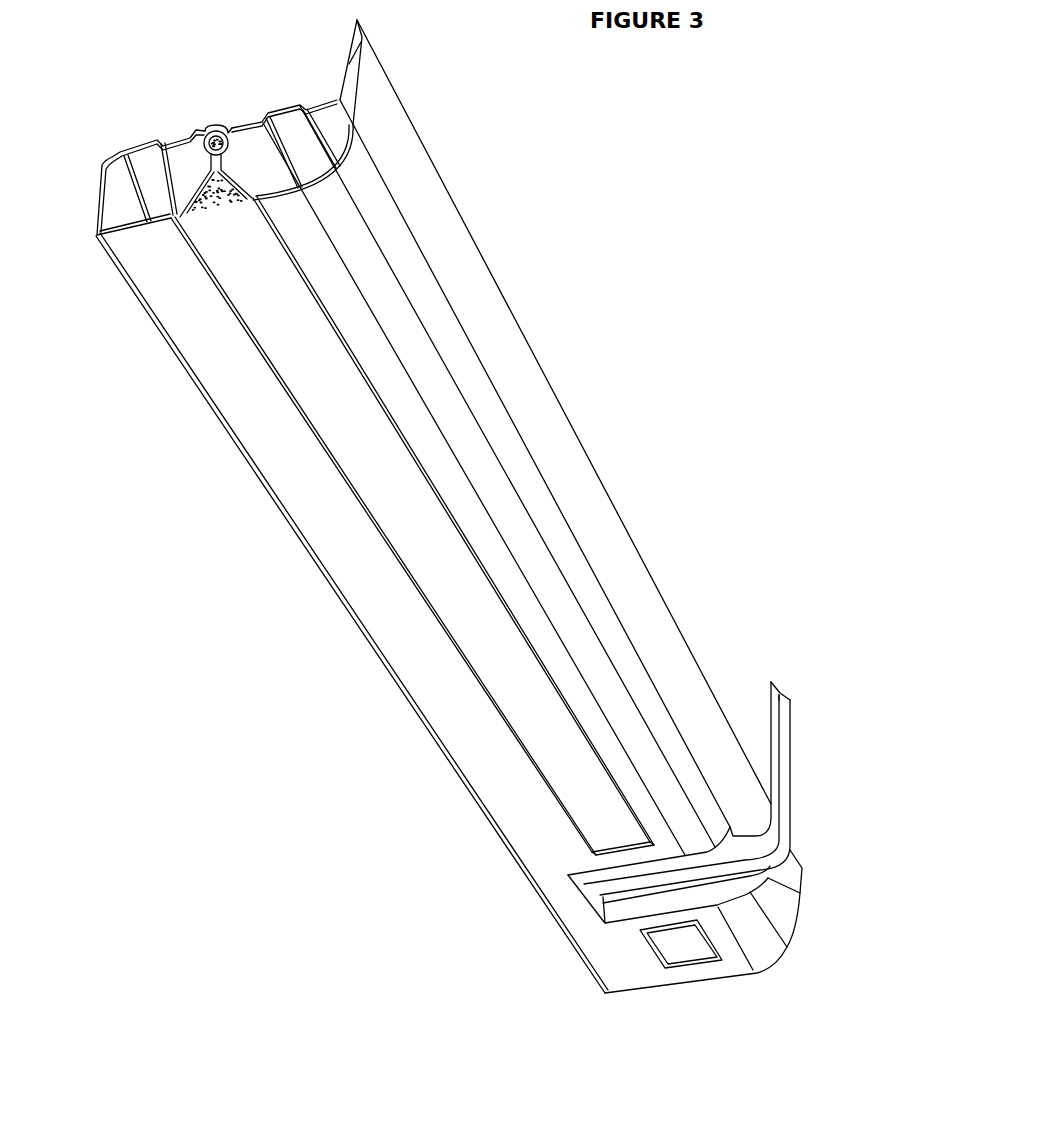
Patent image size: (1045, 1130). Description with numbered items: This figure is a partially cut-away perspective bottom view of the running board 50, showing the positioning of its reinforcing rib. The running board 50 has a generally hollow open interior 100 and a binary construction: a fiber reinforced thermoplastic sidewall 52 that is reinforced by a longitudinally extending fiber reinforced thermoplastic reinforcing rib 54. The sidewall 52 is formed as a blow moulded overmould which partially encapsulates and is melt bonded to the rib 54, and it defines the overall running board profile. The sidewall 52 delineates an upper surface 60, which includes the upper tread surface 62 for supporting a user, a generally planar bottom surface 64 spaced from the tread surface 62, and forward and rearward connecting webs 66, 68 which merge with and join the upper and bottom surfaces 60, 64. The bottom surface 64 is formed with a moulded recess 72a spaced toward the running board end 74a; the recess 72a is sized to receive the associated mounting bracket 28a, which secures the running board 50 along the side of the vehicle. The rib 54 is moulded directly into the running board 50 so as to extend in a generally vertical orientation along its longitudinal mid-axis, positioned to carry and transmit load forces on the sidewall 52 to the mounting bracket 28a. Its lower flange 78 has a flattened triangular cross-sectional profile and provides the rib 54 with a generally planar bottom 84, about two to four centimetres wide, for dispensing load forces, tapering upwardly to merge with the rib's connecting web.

The running board 50 is at (677, 228).
The sidewall 52 is at (500, 359).
The reinforcing rib 54 is at (372, 466).
The upper surface 60 is at (287, 107).
The upper tread surface 62 is at (207, 125).
The bottom surface 64 is at (238, 404).
The forward connecting web 66 is at (100, 172).
The rearward connecting web 68 is at (410, 165).
The lower flange 78 is at (198, 199).
The planar bottom 84 is at (487, 648).
The hollow open interior 100 is at (133, 197).
The mounting bracket 28a is at (789, 739).
The moulded recess 72a is at (620, 909).
The running board end 74a is at (736, 979).